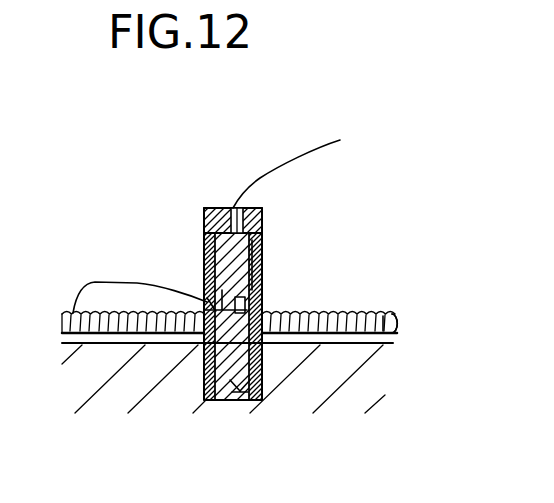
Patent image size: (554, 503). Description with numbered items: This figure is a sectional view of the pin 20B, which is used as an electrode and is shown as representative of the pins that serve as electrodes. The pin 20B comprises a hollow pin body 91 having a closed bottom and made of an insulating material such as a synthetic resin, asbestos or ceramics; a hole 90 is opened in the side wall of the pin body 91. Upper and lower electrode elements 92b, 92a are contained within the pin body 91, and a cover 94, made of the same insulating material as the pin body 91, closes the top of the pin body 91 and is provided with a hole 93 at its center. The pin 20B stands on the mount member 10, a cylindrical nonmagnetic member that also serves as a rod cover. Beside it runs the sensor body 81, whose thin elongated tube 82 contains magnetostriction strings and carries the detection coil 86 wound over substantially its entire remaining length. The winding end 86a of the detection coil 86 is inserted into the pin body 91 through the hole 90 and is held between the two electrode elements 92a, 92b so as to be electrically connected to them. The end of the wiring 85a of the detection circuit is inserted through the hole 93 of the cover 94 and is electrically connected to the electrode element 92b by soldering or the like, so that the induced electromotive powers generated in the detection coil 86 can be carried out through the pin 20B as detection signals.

The mount member 10 is at (368, 377).
The pin 20B is at (247, 312).
The sensor body 81 is at (376, 305).
The tube 82 is at (384, 313).
The wiring 85a is at (293, 158).
The detection coil 86 is at (133, 334).
The winding end 86a is at (123, 283).
The hole 90 is at (207, 298).
The pin body 91 is at (262, 253).
The lower electrode element 92a is at (242, 391).
The upper electrode element 92b is at (262, 270).
The hole 93 is at (233, 208).
The cover 94 is at (262, 212).